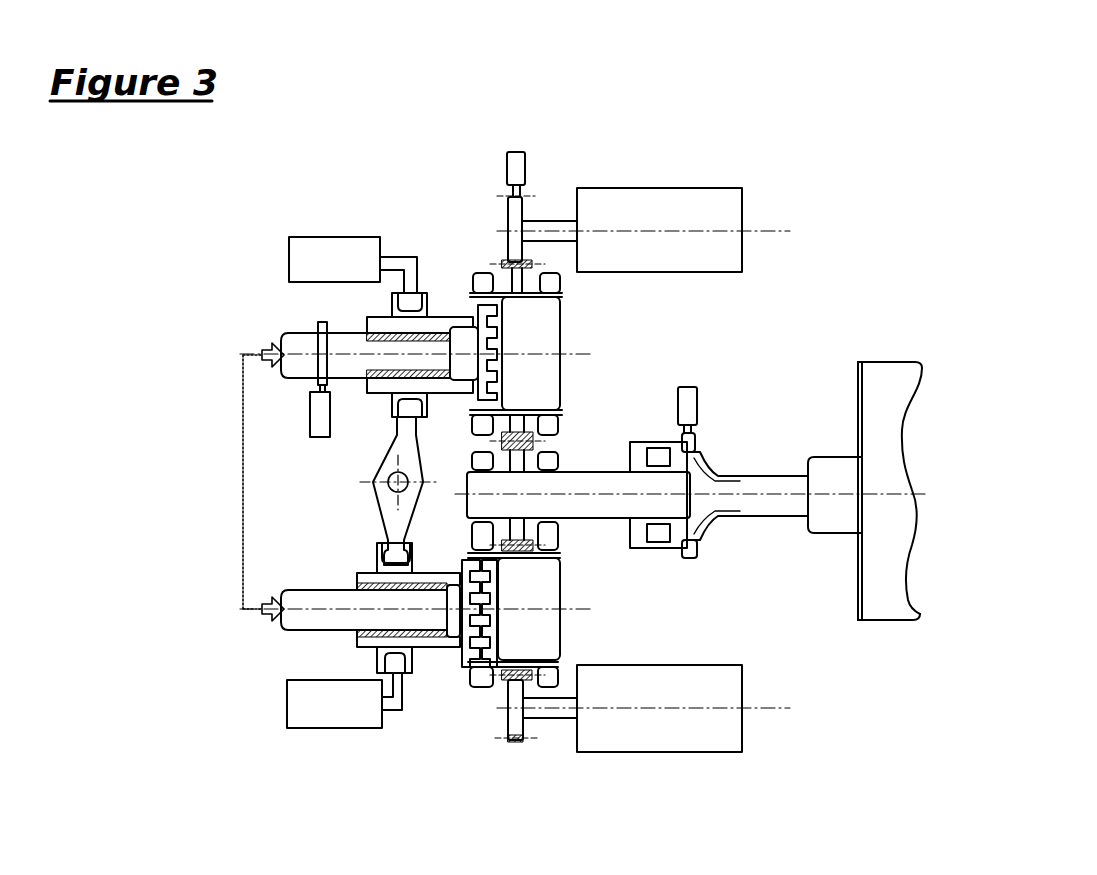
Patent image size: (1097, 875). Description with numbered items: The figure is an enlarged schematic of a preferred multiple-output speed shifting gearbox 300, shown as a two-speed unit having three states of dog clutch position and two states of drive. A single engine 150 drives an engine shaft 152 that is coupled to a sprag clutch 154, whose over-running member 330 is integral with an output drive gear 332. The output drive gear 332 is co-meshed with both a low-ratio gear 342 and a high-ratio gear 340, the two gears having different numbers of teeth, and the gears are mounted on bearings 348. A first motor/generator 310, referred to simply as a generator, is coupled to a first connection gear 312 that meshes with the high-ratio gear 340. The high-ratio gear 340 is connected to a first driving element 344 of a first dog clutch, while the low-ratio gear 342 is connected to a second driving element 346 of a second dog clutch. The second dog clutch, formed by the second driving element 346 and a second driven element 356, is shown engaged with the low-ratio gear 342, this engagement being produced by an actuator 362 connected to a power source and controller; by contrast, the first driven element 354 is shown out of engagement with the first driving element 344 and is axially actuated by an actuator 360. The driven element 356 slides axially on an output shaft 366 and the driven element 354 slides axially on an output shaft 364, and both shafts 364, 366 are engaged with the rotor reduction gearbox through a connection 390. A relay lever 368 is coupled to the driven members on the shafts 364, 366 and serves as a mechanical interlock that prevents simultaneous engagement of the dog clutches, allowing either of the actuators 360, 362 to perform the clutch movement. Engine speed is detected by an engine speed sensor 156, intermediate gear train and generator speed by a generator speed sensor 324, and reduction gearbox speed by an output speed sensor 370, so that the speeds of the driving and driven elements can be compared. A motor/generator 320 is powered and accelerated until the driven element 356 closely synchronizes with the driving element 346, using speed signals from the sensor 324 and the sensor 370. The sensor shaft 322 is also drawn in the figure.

The multiple-output speed shifting gearbox 300 is at (176, 207).
The first motor/generator 310 is at (643, 752).
The first connection gear 312 is at (522, 728).
The motor/generator 320 is at (660, 187).
The upper sensor shaft 322 is at (508, 208).
The generator speed sensor 324 is at (516, 150).
The over-running member 330 is at (583, 515).
The output drive gear 332 is at (533, 542).
The high-ratio gear 340 is at (518, 562).
The low-ratio gear 342 is at (525, 427).
The first driving element 344 is at (490, 643).
The second driving element 346 is at (502, 380).
The bearings 348 is at (478, 683).
The first driven element 354 is at (465, 655).
The second driven element 356 is at (476, 311).
The actuator 360 is at (320, 728).
The actuator 362 is at (350, 238).
The output shaft 364 is at (300, 627).
The output shaft 366 is at (305, 333).
The relay lever 368 is at (378, 507).
The output speed sensor 370 is at (308, 422).
The connection 390 is at (245, 500).
The engine 150 is at (902, 622).
The engine shaft 152 is at (770, 473).
The sprag clutch 154 is at (647, 443).
The engine speed sensor 156 is at (688, 385).